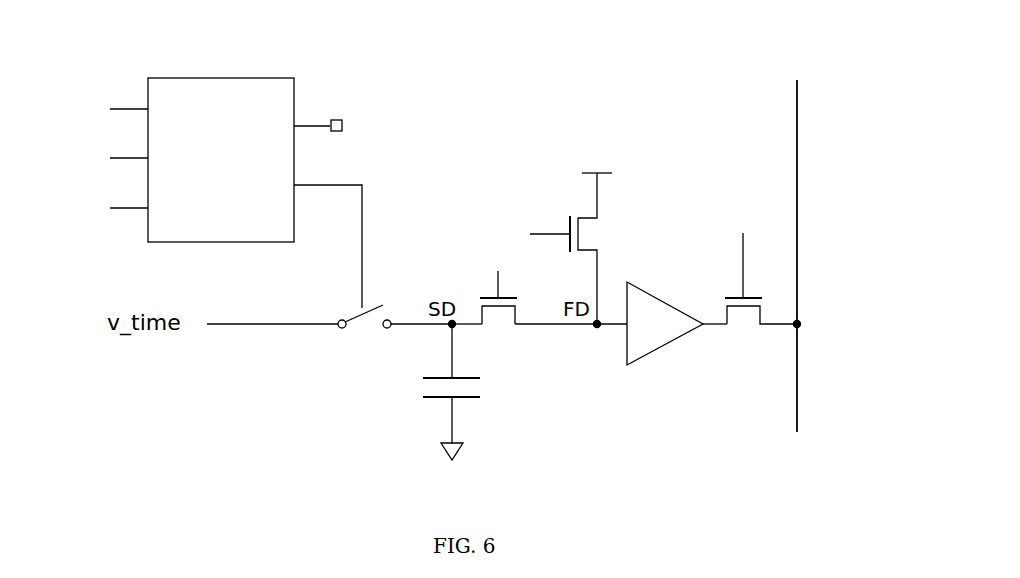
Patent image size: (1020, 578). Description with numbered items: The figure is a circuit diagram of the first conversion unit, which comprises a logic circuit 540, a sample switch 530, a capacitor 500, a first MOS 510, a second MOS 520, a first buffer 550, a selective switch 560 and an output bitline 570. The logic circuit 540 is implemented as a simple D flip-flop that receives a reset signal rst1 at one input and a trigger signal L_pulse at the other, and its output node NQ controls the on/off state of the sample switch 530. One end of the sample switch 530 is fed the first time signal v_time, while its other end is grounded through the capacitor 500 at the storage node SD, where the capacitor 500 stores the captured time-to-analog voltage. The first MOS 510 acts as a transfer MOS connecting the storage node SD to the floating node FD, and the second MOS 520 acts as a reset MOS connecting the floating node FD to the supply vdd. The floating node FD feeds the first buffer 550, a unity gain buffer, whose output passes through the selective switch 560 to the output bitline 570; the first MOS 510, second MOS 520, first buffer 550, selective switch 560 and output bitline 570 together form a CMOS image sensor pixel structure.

The capacitor 500 is at (483, 387).
The first MOS 510 is at (494, 323).
The second MOS 520 is at (598, 234).
The sample switch 530 is at (347, 310).
The logic circuit 540 is at (220, 78).
The first buffer 550 is at (650, 287).
The selective switch 560 is at (762, 288).
The output bitline 570 is at (802, 170).